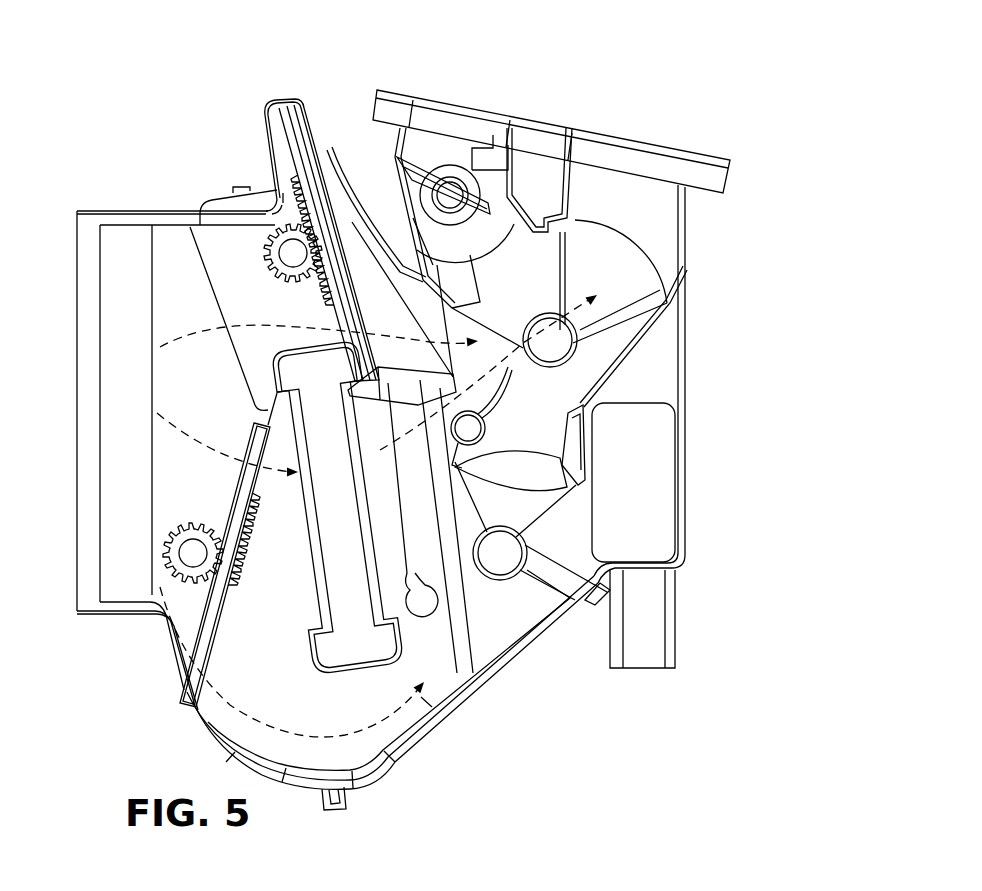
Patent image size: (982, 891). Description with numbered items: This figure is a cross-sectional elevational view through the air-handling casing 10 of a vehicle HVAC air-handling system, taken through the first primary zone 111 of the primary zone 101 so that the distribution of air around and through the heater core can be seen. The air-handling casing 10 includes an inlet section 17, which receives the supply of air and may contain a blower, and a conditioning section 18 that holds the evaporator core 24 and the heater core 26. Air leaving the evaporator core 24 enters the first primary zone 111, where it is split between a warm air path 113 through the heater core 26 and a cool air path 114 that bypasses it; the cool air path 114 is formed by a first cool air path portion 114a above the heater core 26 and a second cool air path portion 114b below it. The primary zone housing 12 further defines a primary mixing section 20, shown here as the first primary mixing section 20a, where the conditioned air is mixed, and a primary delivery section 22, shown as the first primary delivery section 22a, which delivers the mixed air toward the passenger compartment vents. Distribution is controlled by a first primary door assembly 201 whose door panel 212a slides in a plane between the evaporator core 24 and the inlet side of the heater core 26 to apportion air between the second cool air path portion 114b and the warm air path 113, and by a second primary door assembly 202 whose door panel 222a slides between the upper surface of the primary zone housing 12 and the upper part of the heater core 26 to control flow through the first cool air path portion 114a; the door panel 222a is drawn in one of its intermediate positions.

The air-handling casing 10 is at (209, 83).
The primary zone housing 12 is at (546, 119).
The inlet section 17 is at (74, 277).
The conditioning section 18 is at (166, 238).
The primary mixing section 20 is at (523, 247).
The first primary mixing section 20a is at (477, 352).
The primary delivery section 22 is at (655, 426).
The first primary delivery section 22a is at (656, 213).
The evaporator core 24 is at (143, 393).
The heater core 26 is at (358, 533).
The primary zone 101 is at (390, 499).
The first primary zone 111 is at (296, 815).
The warm air path 113 is at (382, 535).
The cool air path 114 is at (389, 490).
The first cool air path portion 114a is at (362, 293).
The second cool air path portion 114b is at (378, 748).
The first primary door assembly 201 is at (182, 711).
The second primary door assembly 202 is at (276, 96).
The door panel 212a is at (237, 569).
The door panel 222a is at (318, 180).